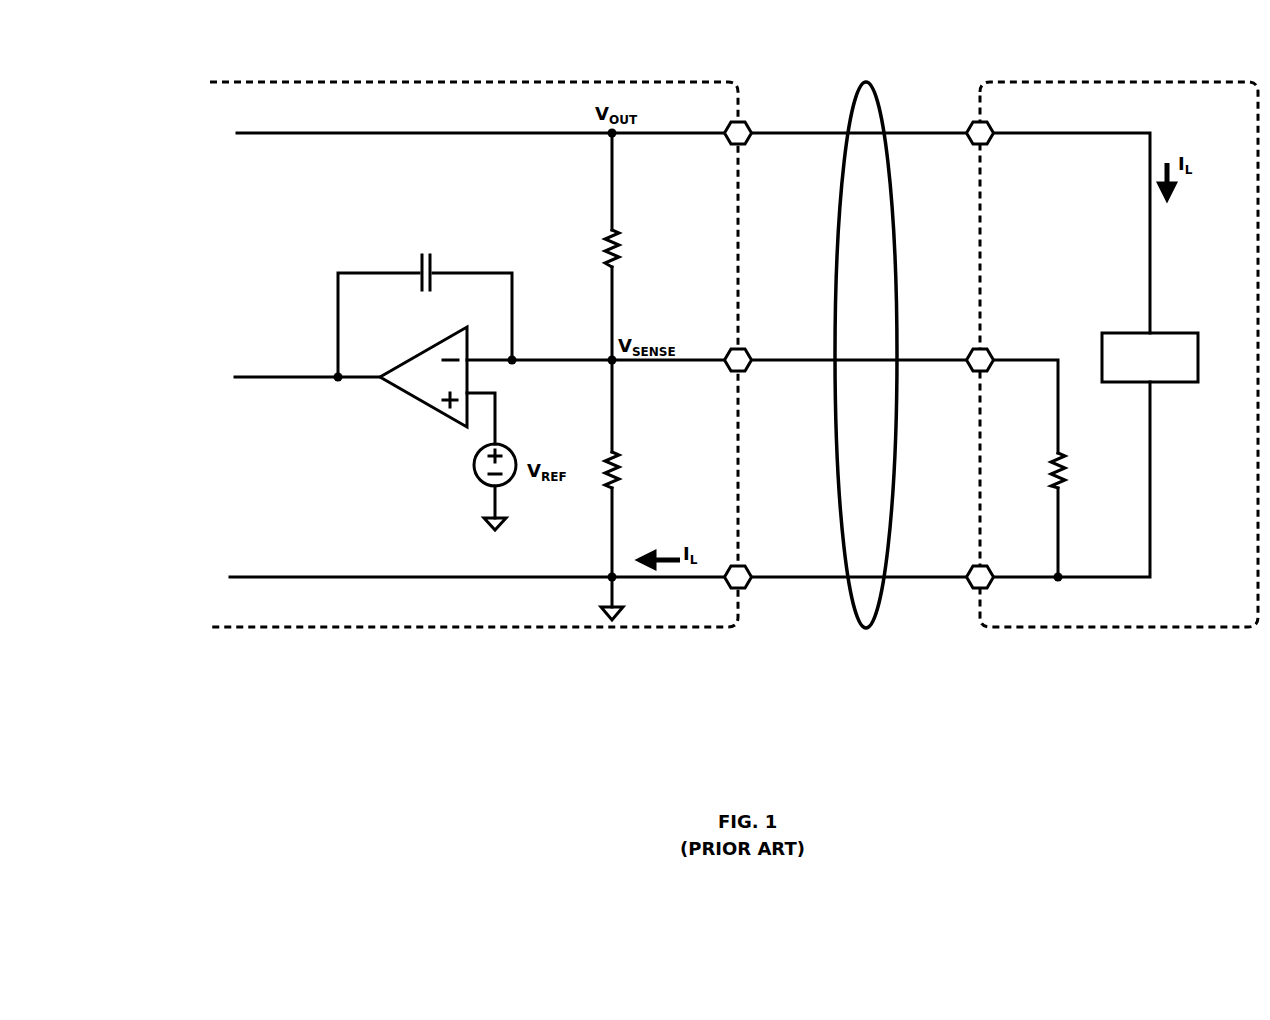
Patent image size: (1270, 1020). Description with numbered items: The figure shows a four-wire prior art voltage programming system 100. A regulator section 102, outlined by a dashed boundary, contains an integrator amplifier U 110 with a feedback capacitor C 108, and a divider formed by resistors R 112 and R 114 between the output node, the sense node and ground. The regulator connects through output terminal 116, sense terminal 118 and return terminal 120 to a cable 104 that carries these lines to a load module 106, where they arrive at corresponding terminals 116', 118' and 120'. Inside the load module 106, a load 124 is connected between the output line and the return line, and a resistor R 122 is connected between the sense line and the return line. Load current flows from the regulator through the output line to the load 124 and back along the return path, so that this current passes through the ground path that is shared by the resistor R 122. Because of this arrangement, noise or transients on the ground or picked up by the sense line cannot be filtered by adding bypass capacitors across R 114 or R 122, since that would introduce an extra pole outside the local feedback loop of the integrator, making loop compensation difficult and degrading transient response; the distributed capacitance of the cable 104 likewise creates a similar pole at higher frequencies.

The voltage programming system 100 is at (483, 810).
The voltage regulator 102 is at (492, 82).
The cable 104 is at (866, 82).
The load module 106 is at (1100, 82).
The compensation capacitor C108 108 is at (429, 261).
The error amplifier U110 110 is at (423, 383).
The feedback resistor R112 112 is at (635, 248).
The resistor R114 114 is at (635, 470).
The output terminal 116 is at (760, 107).
The load-side output terminal 116' is at (956, 107).
The sense terminal 118 is at (760, 335).
The load-side sense terminal 118' is at (956, 335).
The ground/return terminal 120 is at (760, 550).
The load-side return terminal 120' is at (956, 550).
The resistor R122 122 is at (1080, 470).
The load 124 is at (1180, 333).